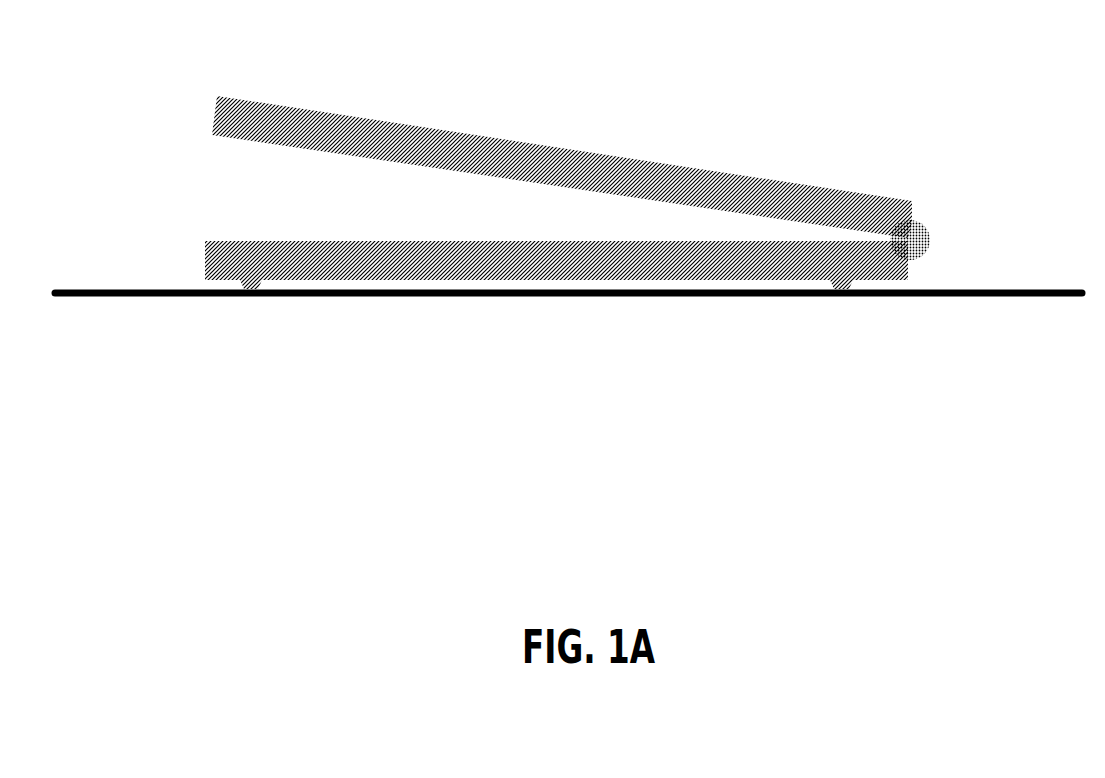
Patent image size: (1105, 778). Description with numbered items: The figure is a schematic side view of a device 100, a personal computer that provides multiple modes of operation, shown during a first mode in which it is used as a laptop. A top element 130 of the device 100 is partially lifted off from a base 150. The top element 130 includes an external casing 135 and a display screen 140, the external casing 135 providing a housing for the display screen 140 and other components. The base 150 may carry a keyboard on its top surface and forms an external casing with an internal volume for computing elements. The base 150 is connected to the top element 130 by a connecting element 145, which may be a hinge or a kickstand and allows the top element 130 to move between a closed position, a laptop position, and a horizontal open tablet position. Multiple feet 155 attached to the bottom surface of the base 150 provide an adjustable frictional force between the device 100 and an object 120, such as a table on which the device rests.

The device 100 is at (205, 58).
The object 120 is at (960, 288).
The top element 130 is at (213, 113).
The external casing 135 is at (380, 120).
The display screen 140 is at (300, 145).
The connecting element 145 is at (918, 222).
The base 150 is at (205, 255).
The feet 155 is at (240, 283).